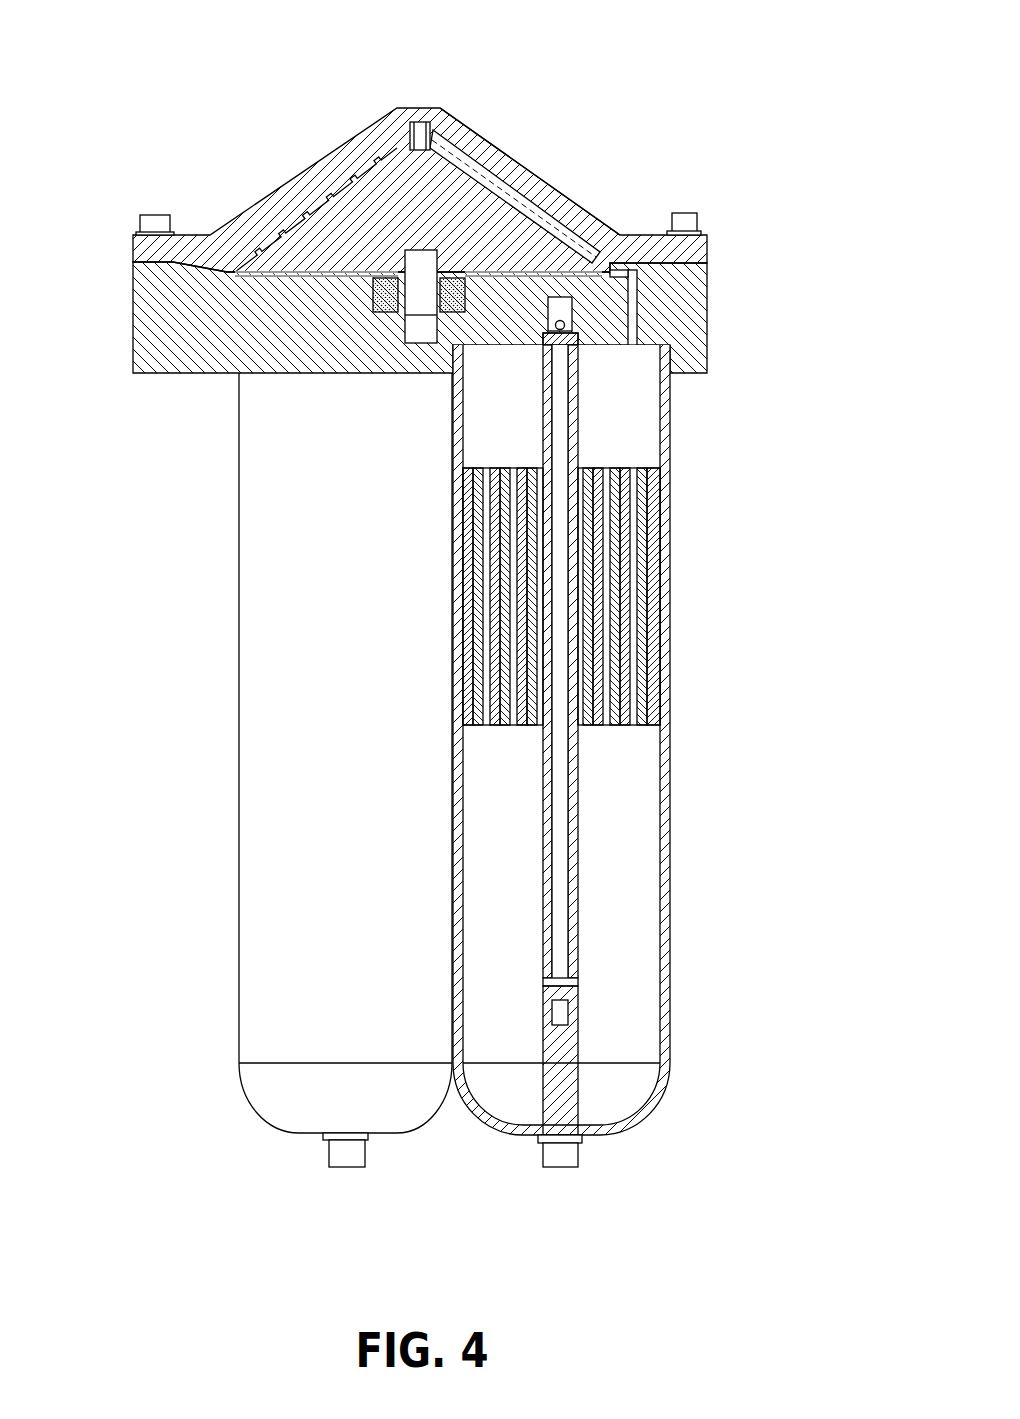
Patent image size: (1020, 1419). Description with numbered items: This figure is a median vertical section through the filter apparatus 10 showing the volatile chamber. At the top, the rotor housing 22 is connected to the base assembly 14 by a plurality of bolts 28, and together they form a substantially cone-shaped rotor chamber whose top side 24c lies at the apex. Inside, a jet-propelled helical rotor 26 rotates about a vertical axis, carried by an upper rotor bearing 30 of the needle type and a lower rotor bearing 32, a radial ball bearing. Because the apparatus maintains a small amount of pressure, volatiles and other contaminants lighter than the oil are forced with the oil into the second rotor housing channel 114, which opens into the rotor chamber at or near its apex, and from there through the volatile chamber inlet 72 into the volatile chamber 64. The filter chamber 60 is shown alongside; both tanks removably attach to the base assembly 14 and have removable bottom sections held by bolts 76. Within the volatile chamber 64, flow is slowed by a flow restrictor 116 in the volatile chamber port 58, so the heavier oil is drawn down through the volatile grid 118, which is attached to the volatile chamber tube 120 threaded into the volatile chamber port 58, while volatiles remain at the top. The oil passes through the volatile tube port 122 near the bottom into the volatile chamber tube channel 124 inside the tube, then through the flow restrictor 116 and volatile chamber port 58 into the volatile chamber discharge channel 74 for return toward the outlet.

The filter apparatus 10 is at (466, 626).
The base assembly 14 is at (130, 285).
The rotor housing 22 is at (313, 167).
The top side of rotor chamber 24c is at (487, 173).
The rotor 26 is at (377, 172).
The bolts 28 is at (150, 212).
The upper rotor bearing 30 is at (432, 120).
The lower rotor bearing 32 is at (372, 300).
The volatile chamber port 58 is at (560, 308).
The filter chamber 60 is at (238, 887).
The volatile chamber 64 is at (673, 998).
The volatile chamber inlet 72 is at (633, 317).
The volatile chamber discharge channel 74 is at (568, 325).
The bolts 76 is at (330, 1158).
The second rotor housing channel 114 is at (539, 206).
The flow restrictor 116 is at (566, 342).
The volatile grid 118 is at (637, 703).
The volatile chamber tube 120 is at (578, 893).
The volatile tube port 122 is at (580, 978).
The volatile chamber tube channel 124 is at (556, 800).